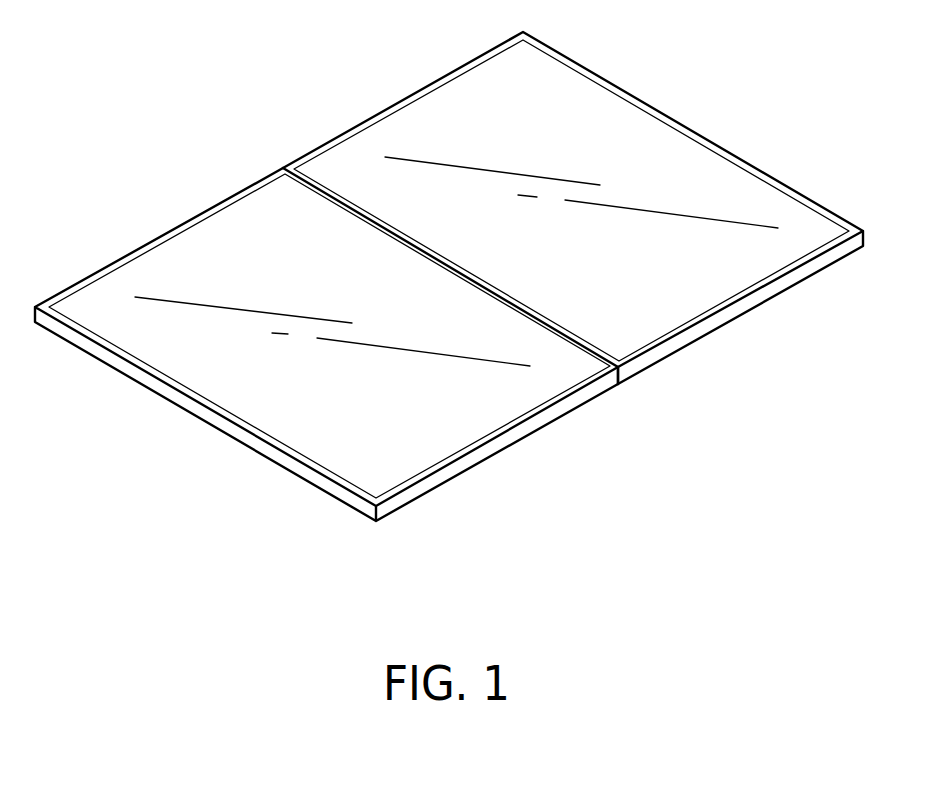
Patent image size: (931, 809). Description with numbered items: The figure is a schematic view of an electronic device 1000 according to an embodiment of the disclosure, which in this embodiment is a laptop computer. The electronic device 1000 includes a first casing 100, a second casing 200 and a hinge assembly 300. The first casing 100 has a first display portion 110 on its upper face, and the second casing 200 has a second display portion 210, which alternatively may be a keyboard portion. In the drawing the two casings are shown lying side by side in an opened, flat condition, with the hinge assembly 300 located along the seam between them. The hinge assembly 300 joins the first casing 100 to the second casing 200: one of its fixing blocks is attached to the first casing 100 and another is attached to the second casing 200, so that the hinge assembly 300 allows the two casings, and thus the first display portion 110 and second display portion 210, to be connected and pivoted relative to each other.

The electronic device 1000 is at (767, 98).
The first casing 100 is at (742, 300).
The first display portion 110 is at (453, 115).
The second casing 200 is at (432, 477).
The second display portion 210 is at (178, 247).
The hinge assembly 300 is at (590, 343).